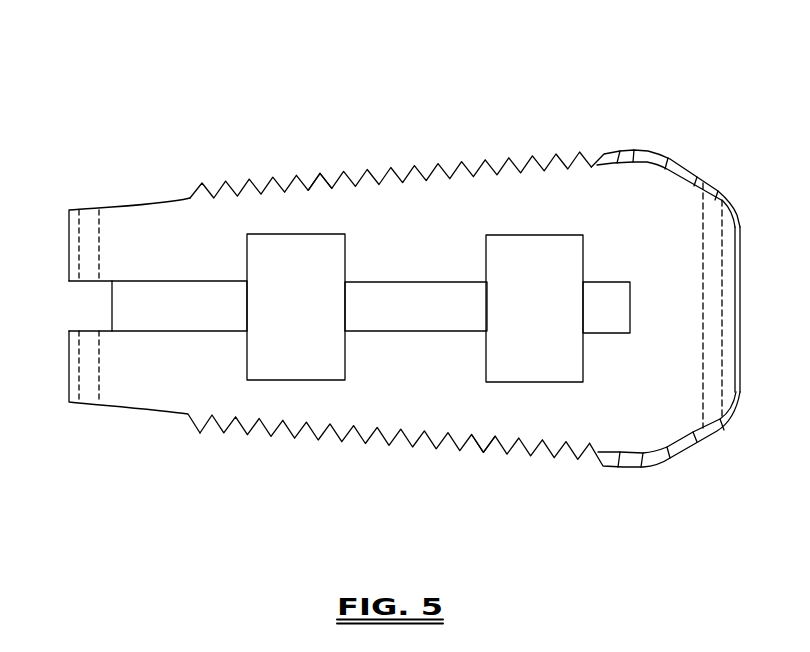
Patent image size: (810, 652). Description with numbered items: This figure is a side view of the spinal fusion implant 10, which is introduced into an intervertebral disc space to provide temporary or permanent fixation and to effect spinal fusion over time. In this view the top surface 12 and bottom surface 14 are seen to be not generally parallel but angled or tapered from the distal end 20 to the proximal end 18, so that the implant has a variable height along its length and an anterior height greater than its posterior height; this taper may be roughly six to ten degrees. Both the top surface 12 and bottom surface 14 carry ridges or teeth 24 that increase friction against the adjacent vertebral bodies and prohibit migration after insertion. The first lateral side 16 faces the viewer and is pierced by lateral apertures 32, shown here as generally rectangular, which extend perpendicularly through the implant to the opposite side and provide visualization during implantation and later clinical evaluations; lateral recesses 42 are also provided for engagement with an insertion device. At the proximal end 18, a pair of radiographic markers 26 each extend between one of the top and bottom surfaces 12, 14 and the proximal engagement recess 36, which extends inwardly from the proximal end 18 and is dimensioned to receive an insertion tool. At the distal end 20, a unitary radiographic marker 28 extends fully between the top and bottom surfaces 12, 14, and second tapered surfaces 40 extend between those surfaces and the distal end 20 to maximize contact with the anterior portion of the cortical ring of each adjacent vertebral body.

The spinal fusion implant 10 is at (534, 65).
The top surface 12 is at (406, 170).
The bottom surface 14 is at (402, 440).
The first lateral side 16 is at (150, 380).
The proximal end 18 is at (69, 232).
The distal end 20 is at (740, 277).
The ridges 24 is at (320, 173).
The radiographic markers 26 is at (90, 246).
The radiographic marker 28 is at (715, 327).
The lateral apertures 32 is at (283, 320).
The proximal engagement recess 36 is at (75, 304).
The second tapered surfaces 40 is at (692, 160).
The lateral recesses 42 is at (161, 320).